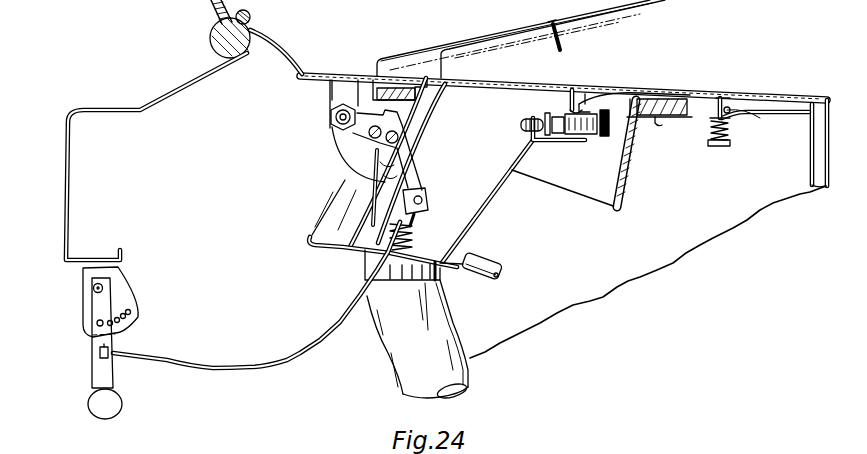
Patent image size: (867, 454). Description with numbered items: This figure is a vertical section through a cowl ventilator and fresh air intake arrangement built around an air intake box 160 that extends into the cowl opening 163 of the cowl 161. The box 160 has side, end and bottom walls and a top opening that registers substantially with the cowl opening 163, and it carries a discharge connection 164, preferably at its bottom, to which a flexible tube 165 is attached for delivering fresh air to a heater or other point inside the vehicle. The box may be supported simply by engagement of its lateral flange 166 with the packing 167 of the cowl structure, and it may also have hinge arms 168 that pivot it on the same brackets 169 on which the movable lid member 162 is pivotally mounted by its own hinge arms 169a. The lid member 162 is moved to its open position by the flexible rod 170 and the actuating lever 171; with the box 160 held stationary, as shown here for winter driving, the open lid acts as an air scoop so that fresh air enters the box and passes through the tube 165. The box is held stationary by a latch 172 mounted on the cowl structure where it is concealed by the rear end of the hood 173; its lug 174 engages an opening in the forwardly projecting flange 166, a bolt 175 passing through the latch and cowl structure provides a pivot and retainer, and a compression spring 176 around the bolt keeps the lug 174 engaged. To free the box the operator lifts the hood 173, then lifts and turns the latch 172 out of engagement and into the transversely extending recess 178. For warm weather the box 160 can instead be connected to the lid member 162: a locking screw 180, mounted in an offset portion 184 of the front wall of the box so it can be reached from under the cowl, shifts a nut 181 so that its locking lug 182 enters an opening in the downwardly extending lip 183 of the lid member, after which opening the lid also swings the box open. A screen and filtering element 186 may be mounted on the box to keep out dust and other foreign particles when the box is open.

The air intake box 160 is at (495, 198).
The cowl 161 is at (318, 69).
The lid member 162 is at (587, 92).
The cowl opening 163 is at (612, 98).
The discharge connection 164 is at (437, 274).
The flexible tube 165 is at (457, 367).
The lateral flange 166 is at (670, 93).
The packing 167 is at (657, 119).
The hinge arms 168 is at (350, 147).
The brackets 169 is at (333, 95).
The hinge arms 169a is at (366, 75).
The flexible rod 170 is at (280, 360).
The actuating lever 171 is at (100, 385).
The latch 172 is at (720, 100).
The hood 173 is at (768, 97).
The lug 174 is at (657, 104).
The bolt 175 is at (729, 124).
The compression spring 176 is at (712, 134).
The transversely extending recess 178 is at (740, 114).
The locking screw 180 is at (600, 136).
The nut 181 is at (553, 142).
The locking lug 182 is at (535, 132).
The lip 183 is at (540, 100).
The offset portion 184 is at (585, 142).
The screen and filtering element 186 is at (626, 190).